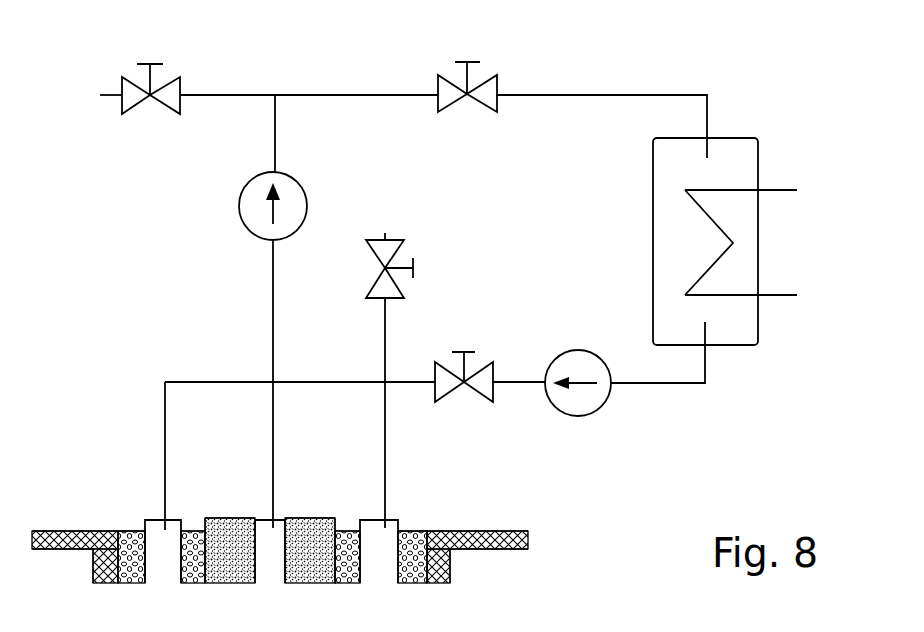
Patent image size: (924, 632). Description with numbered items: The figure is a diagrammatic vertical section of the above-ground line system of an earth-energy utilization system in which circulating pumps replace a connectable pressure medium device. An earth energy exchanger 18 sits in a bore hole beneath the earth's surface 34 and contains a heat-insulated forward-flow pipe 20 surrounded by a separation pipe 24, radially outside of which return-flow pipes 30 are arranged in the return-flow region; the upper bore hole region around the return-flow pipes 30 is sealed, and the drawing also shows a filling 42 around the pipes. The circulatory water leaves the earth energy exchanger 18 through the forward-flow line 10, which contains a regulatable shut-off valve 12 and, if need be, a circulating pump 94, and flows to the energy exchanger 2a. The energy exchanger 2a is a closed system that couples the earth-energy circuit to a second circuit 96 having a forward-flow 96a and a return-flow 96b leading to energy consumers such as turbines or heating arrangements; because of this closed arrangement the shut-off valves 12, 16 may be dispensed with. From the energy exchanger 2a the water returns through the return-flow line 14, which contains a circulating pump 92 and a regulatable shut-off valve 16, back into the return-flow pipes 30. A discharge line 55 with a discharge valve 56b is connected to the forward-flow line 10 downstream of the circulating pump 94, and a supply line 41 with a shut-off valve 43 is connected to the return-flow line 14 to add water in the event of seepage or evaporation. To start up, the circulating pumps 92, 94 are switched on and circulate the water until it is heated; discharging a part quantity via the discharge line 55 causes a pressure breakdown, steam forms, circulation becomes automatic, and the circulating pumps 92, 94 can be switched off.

The energy exchanger 2a is at (742, 130).
The forward-flow line 10 is at (377, 93).
The shut-off valve 12 is at (459, 108).
The return-flow line 14 is at (353, 380).
The shut-off valve 16 is at (449, 360).
The earth energy exchanger 18 is at (273, 509).
The forward-flow pipe 20 is at (273, 528).
The separation pipe 24 is at (205, 517).
The return-flow pipe 30 is at (158, 520).
The earth's surface 34 is at (483, 530).
The supply line 41 is at (384, 240).
The sealing fill 42 is at (320, 518).
The shut-off valve 43 is at (387, 292).
The discharge line 55 is at (220, 93).
The discharge valve 56b is at (128, 68).
The circulating pump 92 is at (582, 355).
The circulating pump 94 is at (250, 216).
The second circuit 96 is at (695, 224).
The forward-flow 96a is at (786, 188).
The return-flow 96b is at (782, 290).